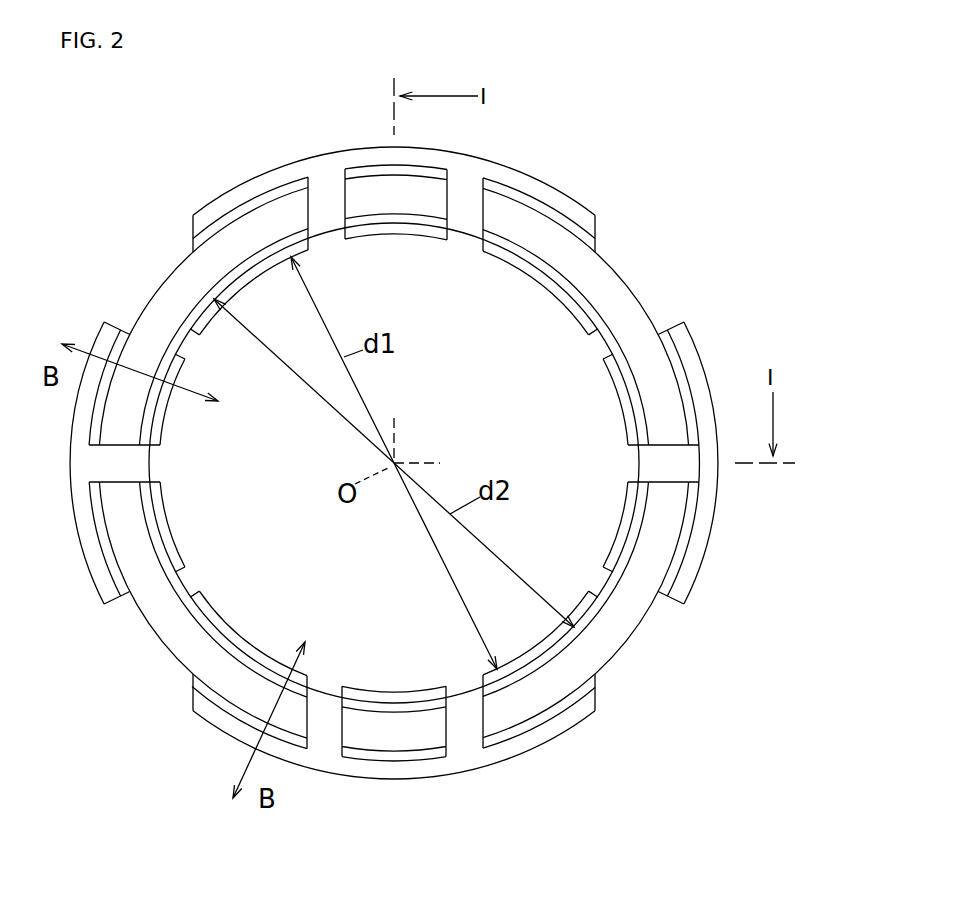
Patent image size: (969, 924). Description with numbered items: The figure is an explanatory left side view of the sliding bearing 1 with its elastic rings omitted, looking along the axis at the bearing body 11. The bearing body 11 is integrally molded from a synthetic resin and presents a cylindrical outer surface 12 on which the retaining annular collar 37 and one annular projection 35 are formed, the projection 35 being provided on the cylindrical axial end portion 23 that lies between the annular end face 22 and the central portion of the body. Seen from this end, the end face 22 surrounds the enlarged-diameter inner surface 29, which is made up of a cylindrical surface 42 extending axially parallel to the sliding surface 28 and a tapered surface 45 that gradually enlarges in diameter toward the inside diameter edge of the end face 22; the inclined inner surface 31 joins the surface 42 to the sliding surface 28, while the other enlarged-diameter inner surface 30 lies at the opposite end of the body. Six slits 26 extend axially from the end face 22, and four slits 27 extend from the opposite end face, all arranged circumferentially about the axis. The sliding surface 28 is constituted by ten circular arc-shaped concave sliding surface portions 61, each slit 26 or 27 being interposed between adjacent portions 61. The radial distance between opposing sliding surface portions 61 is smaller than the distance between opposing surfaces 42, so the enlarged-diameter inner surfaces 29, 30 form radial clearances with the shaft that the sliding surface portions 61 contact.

The sliding bearing 1 is at (116, 694).
The bearing body 11 is at (600, 283).
The outer surface 12 is at (647, 307).
The annular end face 22 is at (157, 312).
The axial end portion 23 is at (612, 632).
The slits 26 is at (326, 182).
The slits 27 is at (200, 348).
The sliding surface 28 is at (418, 688).
The enlarged-diameter inner surface 29 is at (263, 668).
The enlarged-diameter inner surface 30 is at (467, 240).
The inclined inner surface 31 is at (300, 268).
The annular projection 35 is at (225, 220).
The retaining annular collar 37 is at (222, 727).
The cylindrical surface 42 is at (567, 290).
The tapered surface 45 is at (530, 257).
The sliding surface portions 61 is at (235, 298).